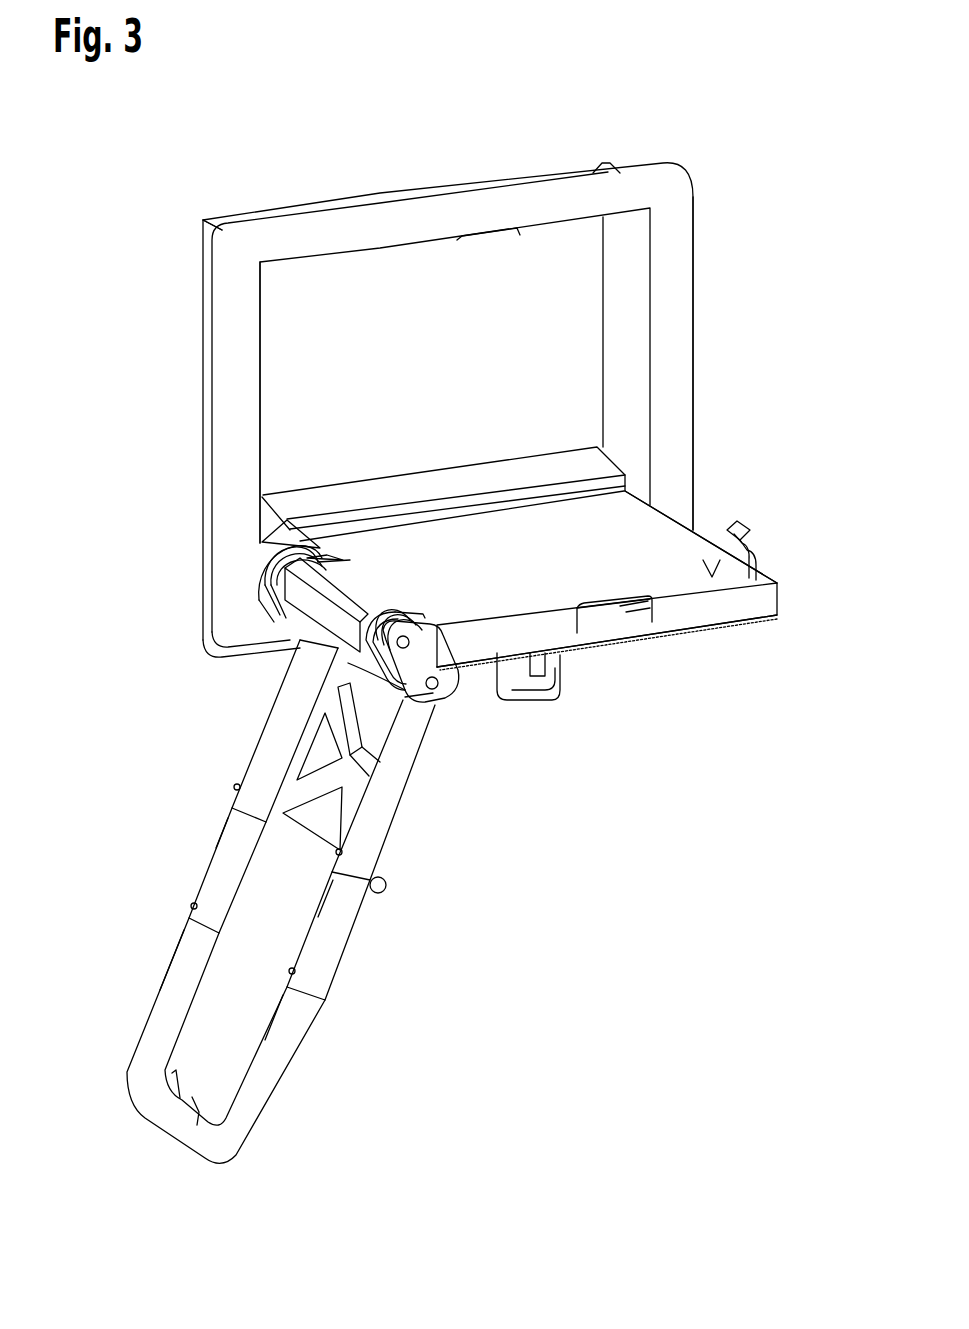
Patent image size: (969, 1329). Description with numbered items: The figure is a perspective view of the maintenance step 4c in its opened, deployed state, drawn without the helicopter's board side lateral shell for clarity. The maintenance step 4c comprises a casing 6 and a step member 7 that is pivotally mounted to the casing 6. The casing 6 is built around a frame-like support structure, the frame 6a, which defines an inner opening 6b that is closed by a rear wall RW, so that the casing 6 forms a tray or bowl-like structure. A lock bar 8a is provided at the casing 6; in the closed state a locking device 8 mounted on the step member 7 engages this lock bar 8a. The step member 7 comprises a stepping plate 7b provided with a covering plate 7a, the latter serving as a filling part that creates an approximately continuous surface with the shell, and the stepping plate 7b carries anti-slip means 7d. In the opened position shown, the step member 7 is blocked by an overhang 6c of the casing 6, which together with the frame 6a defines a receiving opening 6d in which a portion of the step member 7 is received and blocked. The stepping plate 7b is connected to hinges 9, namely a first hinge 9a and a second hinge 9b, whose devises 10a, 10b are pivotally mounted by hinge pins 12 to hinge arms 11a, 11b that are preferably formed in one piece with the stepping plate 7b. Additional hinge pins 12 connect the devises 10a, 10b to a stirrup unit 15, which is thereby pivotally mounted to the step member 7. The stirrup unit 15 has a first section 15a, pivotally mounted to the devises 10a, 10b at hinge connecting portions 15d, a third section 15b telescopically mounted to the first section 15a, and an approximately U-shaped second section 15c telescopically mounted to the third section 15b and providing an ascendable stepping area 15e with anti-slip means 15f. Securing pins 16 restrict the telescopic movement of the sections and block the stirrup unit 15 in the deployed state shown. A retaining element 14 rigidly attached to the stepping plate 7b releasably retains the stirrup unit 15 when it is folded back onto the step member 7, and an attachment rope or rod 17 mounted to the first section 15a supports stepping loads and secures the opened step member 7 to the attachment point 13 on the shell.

The rear wall RW is at (355, 277).
The maintenance step 4c is at (166, 191).
The casing 6 is at (638, 183).
The frame-like support structure 6a is at (699, 255).
The inner opening 6b is at (265, 316).
The overhang 6c is at (463, 485).
The receiving opening 6d is at (490, 512).
The step member 7 is at (704, 529).
The covering plate 7a is at (741, 632).
The stepping plate 7b is at (425, 538).
The anti-slip means 7d is at (727, 560).
The locking device 8 is at (614, 619).
The lock bar 8a is at (497, 236).
The hinges 9 is at (244, 562).
The first hinge 9a is at (414, 710).
The second hinge 9b is at (290, 599).
The devise 10a is at (333, 650).
The devise 10b is at (274, 577).
The hinge arm 11a is at (385, 612).
The hinge arm 11b is at (290, 535).
The hinge pins 12 is at (443, 684).
The attachment point 13 is at (548, 702).
The retaining element 14 is at (760, 548).
The stirrup unit 15 is at (285, 919).
The first section 15a is at (255, 766).
The third section 15b is at (206, 891).
The second section 15c is at (165, 1034).
The hinge connecting portions 15d is at (296, 627).
The ascendable stepping area 15e is at (179, 1093).
The anti-slip means 15f is at (197, 1110).
The securing pins 16 is at (234, 788).
The attachment rope or rod 17 is at (388, 888).